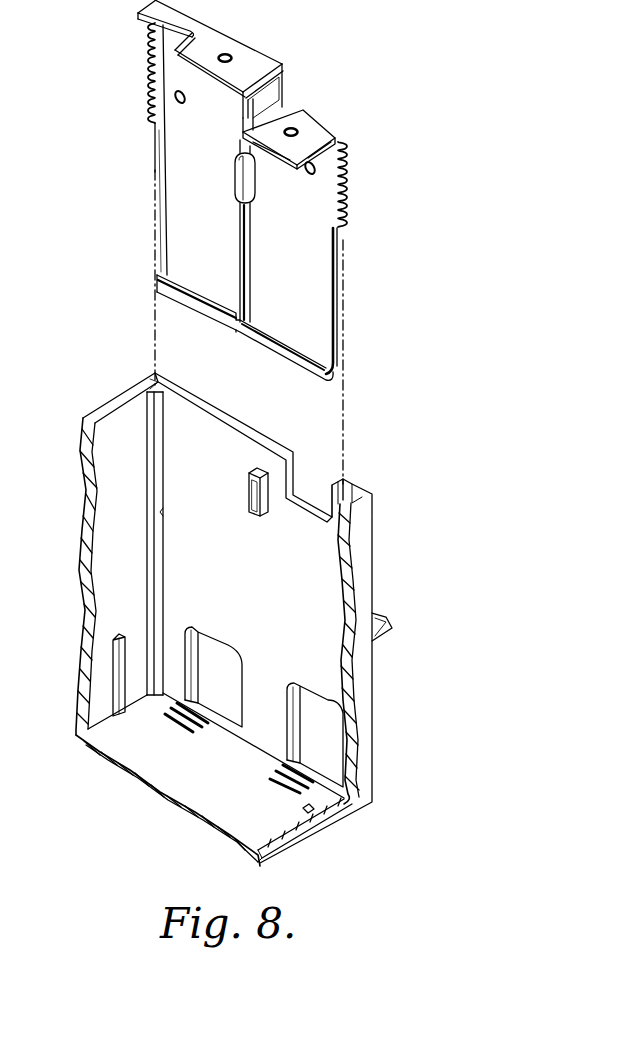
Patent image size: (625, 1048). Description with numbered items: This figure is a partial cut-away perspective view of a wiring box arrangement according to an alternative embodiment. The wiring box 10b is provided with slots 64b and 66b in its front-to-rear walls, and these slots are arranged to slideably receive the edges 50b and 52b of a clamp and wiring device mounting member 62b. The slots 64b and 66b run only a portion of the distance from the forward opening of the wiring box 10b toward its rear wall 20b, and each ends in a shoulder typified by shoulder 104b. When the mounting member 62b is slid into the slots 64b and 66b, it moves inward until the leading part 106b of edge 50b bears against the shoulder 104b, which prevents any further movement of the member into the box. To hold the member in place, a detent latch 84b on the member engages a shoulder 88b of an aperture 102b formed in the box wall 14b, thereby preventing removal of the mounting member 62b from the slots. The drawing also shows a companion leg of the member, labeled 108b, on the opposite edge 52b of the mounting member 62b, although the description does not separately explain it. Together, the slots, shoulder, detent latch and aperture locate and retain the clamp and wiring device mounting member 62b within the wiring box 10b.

The wiring box 10b is at (291, 609).
The box wall 14b is at (279, 596).
The rear wall 20b is at (225, 786).
The edge 50b is at (150, 34).
The edge 52b is at (345, 148).
The clamp and wiring device mounting member 62b is at (261, 242).
The slot 64b is at (164, 385).
The slot 66b is at (345, 486).
The detent latch 84b is at (243, 107).
The shoulder 88b is at (250, 490).
The aperture 102b is at (247, 506).
The shoulder 104b is at (160, 510).
The leading part 106b is at (155, 125).
The right leg 108b is at (352, 305).